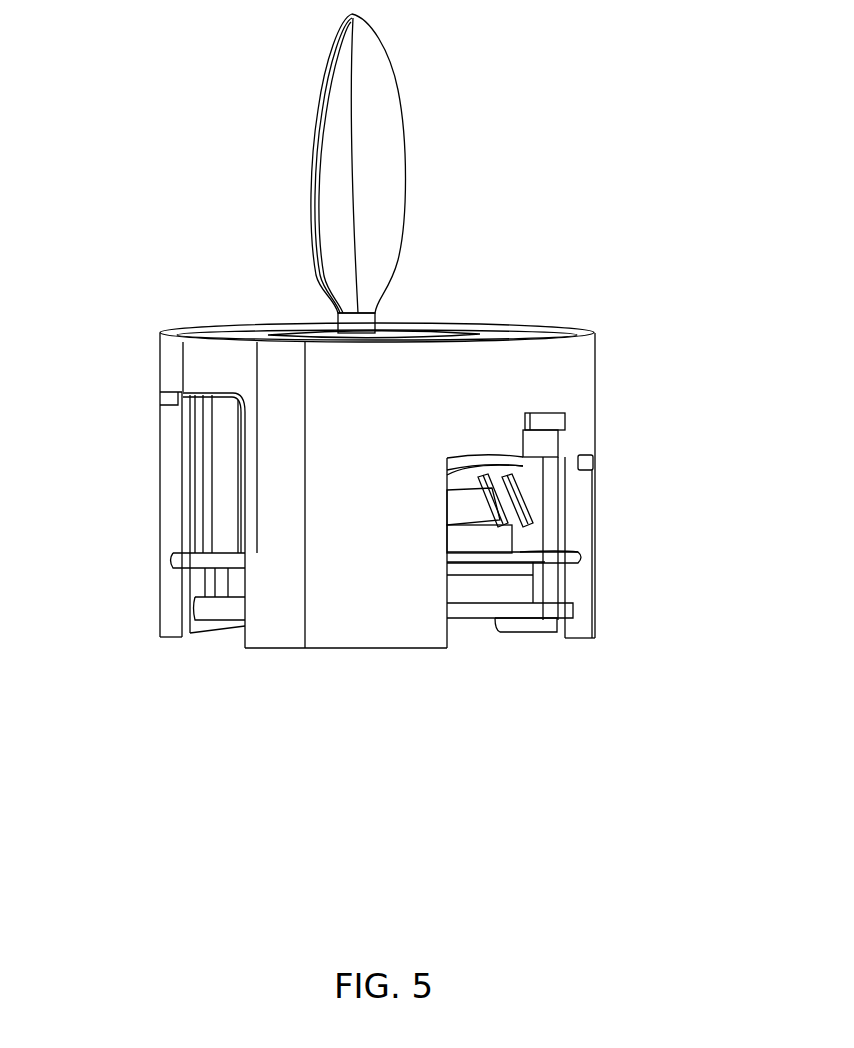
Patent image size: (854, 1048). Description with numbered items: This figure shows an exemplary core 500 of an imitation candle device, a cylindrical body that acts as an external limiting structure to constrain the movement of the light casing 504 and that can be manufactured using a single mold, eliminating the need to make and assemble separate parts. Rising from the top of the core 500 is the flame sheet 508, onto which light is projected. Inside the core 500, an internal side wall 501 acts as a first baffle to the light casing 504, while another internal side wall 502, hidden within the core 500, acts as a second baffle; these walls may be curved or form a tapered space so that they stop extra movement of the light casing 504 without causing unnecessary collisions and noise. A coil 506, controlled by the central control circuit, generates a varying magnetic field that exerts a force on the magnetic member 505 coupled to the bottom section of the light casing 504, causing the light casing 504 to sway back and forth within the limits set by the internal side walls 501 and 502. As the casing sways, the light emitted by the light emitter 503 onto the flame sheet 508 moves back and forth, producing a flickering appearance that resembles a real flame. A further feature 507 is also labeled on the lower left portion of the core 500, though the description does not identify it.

The core 500 is at (467, 390).
The internal side wall 501 is at (533, 465).
The internal side wall 502 is at (340, 430).
The light emitter 503 is at (510, 480).
The light casing 504 is at (462, 492).
The magnetic member 505 is at (475, 540).
The coil 506 is at (505, 590).
The left shelf 507 is at (217, 562).
The flame sheet 508 is at (388, 190).